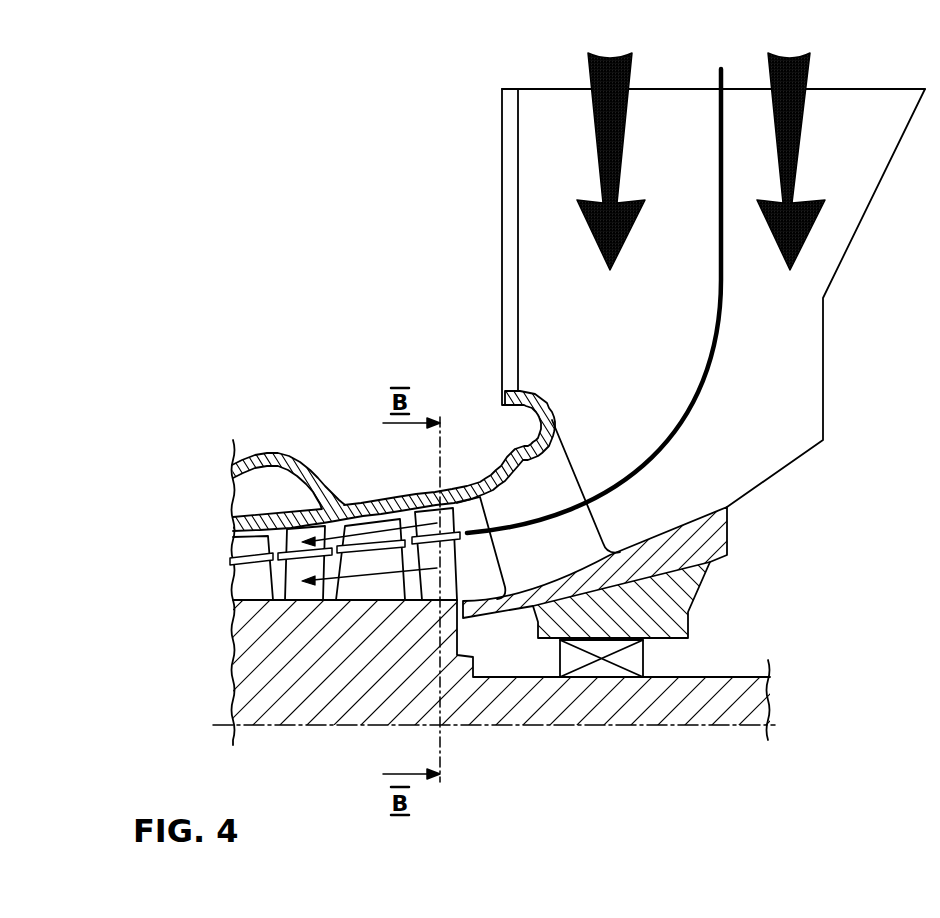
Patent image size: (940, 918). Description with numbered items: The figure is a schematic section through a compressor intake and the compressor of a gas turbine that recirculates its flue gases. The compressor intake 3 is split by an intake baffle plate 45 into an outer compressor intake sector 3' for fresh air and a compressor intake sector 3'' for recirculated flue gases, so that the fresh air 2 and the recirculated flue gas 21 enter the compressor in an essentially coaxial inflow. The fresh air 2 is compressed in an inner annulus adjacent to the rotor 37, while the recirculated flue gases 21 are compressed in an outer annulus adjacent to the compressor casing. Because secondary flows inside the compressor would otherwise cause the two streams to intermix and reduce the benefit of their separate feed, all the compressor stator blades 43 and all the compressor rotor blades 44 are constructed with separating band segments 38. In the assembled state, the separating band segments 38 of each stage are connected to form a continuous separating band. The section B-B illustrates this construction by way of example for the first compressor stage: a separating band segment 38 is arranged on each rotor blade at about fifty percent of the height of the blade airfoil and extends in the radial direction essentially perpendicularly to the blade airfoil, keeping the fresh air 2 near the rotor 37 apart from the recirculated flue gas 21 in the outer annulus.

The fresh air 2 is at (791, 179).
The compressor intake 3 is at (713, 214).
The outer compressor intake sector 3' is at (827, 298).
The compressor intake sector 3'' is at (496, 247).
The recirculated flue gas 21 is at (611, 179).
The rotor 37 is at (672, 707).
The separating band segments 38 is at (430, 533).
The compressor stator blades 43 is at (447, 582).
The compressor rotor blades 44 is at (370, 587).
The intake baffle plate 45 is at (714, 163).